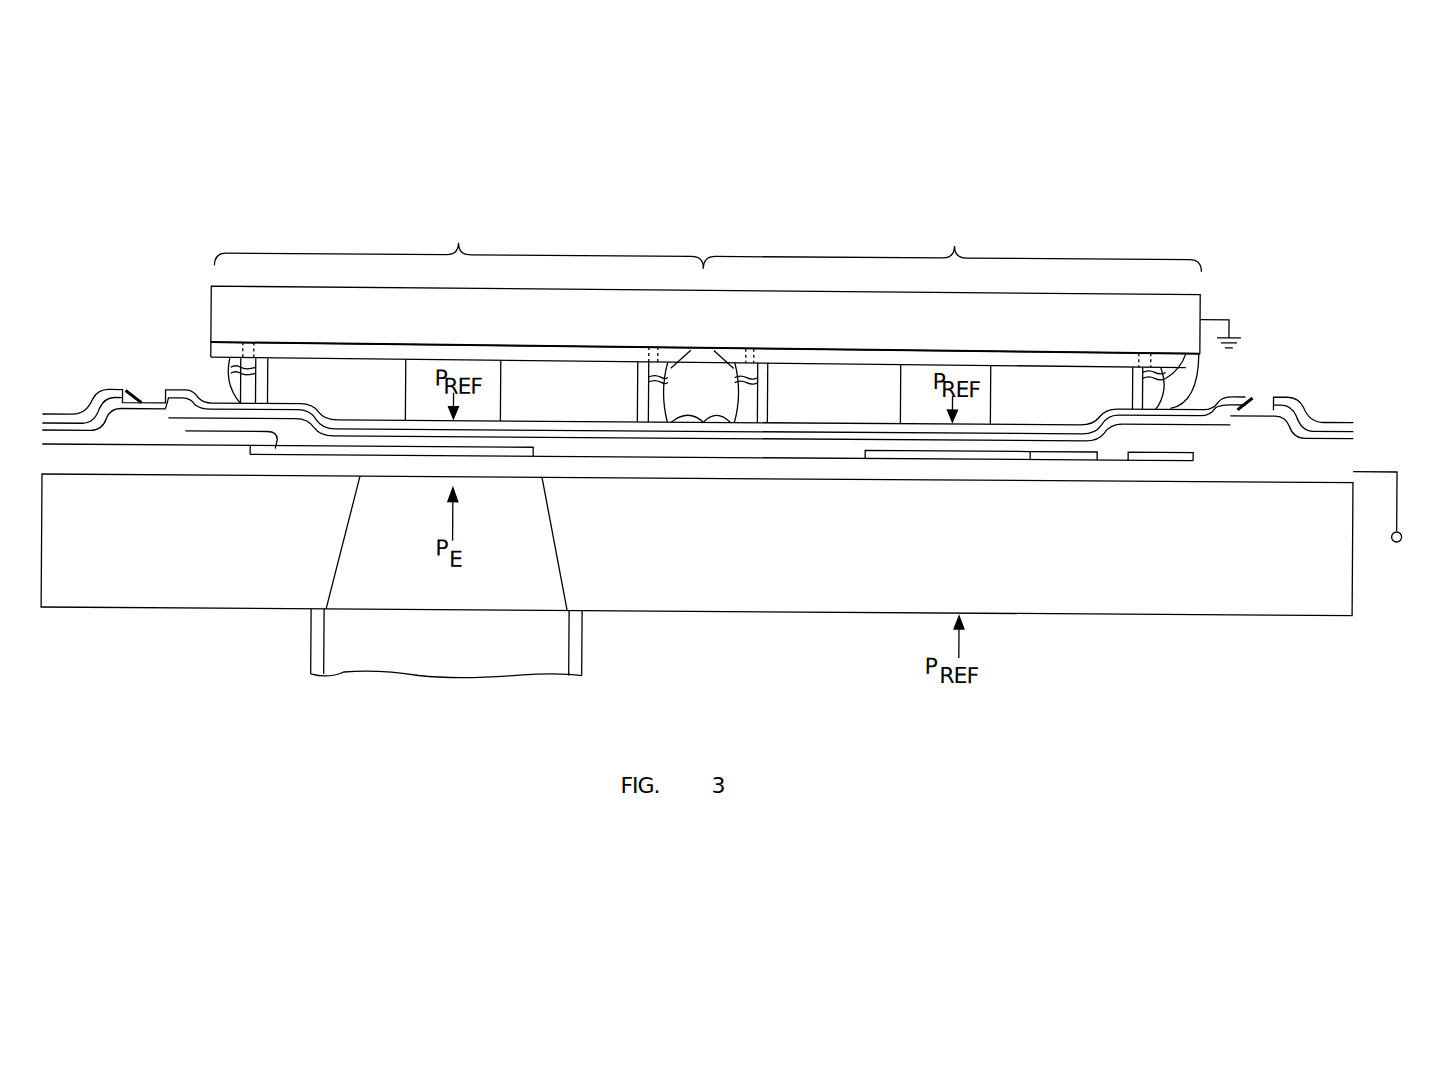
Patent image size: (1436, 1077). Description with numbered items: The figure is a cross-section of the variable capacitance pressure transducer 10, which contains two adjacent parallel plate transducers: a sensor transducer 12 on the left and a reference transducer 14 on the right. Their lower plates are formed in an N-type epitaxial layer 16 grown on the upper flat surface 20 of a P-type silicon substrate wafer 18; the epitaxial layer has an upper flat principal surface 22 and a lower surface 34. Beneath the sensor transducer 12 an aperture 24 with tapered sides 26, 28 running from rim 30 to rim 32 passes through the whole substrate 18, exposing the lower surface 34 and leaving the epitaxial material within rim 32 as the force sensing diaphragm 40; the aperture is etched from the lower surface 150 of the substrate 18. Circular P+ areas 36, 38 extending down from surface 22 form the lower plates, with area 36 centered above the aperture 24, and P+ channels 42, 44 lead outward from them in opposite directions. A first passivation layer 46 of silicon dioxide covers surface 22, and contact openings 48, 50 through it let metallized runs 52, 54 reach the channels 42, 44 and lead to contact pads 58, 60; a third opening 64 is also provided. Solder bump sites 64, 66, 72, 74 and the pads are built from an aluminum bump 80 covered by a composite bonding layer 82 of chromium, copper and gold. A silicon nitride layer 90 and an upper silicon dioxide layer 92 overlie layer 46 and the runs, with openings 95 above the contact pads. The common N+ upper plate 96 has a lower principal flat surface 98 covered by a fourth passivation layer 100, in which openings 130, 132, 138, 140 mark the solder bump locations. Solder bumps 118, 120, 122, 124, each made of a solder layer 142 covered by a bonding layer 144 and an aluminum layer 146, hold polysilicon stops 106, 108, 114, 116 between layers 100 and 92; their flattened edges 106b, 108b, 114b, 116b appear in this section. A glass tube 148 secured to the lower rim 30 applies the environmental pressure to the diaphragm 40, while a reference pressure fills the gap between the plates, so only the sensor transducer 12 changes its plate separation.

The variable capacitance pressure transducer 10 is at (825, 625).
The sensor transducer 12 is at (458, 242).
The reference transducer 14 is at (952, 246).
The N-type epitaxial layer 16 is at (806, 474).
The silicon substrate wafer 18 is at (962, 561).
The upper flat surface 20 is at (148, 478).
The upper flat principal surface 22 is at (1233, 450).
The aperture 24 is at (438, 606).
The tapered side 26 is at (553, 541).
The tapered side 28 is at (347, 546).
The lower rim 30 is at (567, 610).
The rim 32 is at (540, 481).
The lower surface 34 is at (72, 478).
The P+ area 36 is at (517, 452).
The P+ area 38 is at (945, 455).
The force sensing diaphragm 40 is at (422, 478).
The P+ channel 42 is at (302, 455).
The P+ channel 44 is at (1092, 455).
The first passivation layer 46 is at (1353, 443).
The contact opening 48 is at (275, 456).
The contact opening 50 is at (1105, 455).
The metallized run 52 is at (208, 428).
The metallized run 54 is at (1208, 452).
The contact pad 58 is at (145, 383).
The contact pad 60 is at (1270, 392).
The third opening / solder bump site 64 is at (236, 398).
The solder bump site 66 is at (667, 420).
The solder bump site 72 is at (734, 420).
The solder bump site 74 is at (1167, 400).
The aluminum bump 80 is at (131, 425).
The composite bonding layer 82 is at (126, 388).
The silicon nitride layer 90 is at (1353, 420).
The upper silicon dioxide layer 92 is at (1353, 413).
The opening 95 is at (122, 388).
The upper plate 96 is at (543, 330).
The lower principal flat surface 98 is at (492, 346).
The fourth passivation layer 100 is at (410, 348).
The stop 106 is at (403, 387).
The flattened edge 106b is at (240, 393).
The stop 108 is at (500, 387).
The flattened edge 108b is at (637, 398).
The stop 114 is at (899, 387).
The flattened edge 114b is at (767, 398).
The stop 116 is at (990, 387).
The flattened edge 116b is at (1132, 397).
The solder bump 118 is at (264, 374).
The solder bump 120 is at (647, 380).
The solder bump 122 is at (765, 380).
The solder bump 124 is at (1140, 377).
The opening 130 is at (258, 350).
The opening 132 is at (646, 355).
The opening 138 is at (750, 355).
The opening 140 is at (1132, 352).
The solder layer 142 is at (737, 398).
The composite chromium-copper-gold bonding layer 144 is at (189, 354).
The aluminum layer 146 is at (196, 338).
The glass tube 148 is at (423, 660).
The lower surface 150 is at (190, 607).